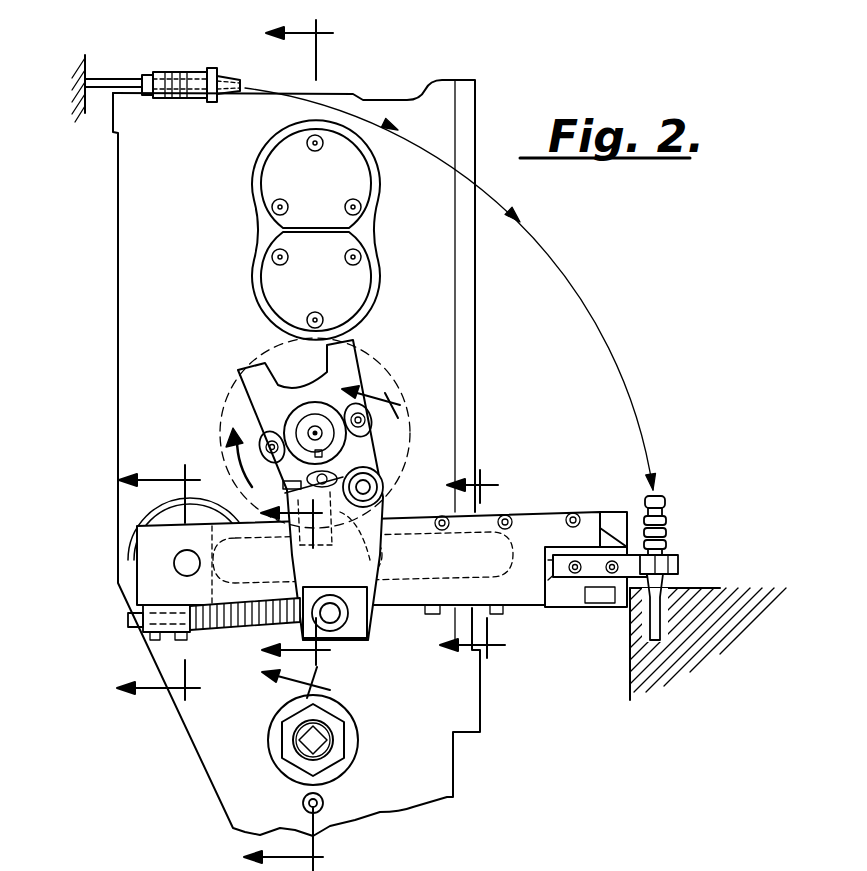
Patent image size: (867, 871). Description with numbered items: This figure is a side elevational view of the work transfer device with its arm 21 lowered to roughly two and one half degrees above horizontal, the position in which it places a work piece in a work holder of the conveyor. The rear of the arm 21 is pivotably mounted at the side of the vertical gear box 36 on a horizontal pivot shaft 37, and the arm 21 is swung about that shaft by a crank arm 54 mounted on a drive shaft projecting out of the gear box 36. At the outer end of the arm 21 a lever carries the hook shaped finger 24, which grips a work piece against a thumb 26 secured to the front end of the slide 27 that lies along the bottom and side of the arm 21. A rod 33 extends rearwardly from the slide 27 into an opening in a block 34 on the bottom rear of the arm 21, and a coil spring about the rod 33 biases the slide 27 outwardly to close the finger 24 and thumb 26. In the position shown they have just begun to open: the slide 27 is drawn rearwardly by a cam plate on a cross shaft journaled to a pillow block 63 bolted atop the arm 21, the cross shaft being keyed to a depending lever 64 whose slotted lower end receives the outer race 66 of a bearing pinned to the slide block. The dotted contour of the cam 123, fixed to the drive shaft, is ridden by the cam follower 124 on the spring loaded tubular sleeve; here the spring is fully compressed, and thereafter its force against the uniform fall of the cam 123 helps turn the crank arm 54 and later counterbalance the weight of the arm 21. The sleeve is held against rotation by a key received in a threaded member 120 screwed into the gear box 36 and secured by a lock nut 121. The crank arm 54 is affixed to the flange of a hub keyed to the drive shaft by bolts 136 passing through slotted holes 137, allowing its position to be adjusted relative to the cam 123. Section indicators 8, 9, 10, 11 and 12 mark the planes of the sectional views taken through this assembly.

The gear box 36 is at (118, 290).
The depending lever 64 is at (385, 553).
The horizontal pivot shaft 37 is at (173, 562).
The arm 21 is at (563, 512).
The slide 27 is at (535, 600).
The thumb 26 is at (663, 555).
The finger 24 is at (682, 563).
The crank arm 54 is at (235, 391).
The cam 123 is at (267, 350).
The slotted holes 137 is at (367, 415).
The bolts 136 is at (370, 421).
The pillow block 63 is at (395, 505).
The outer race 66 is at (340, 640).
The cam follower 124 is at (370, 627).
The block 34 is at (140, 623).
The rod 33 is at (223, 623).
The lock nut 121 is at (343, 732).
The threaded member 120 is at (295, 743).
The section line 8- 8 is at (323, 533).
The section line 9- 9 is at (474, 565).
The section line 10- 10 is at (284, 333).
The section line 11- 11 is at (272, 680).
The section line 12- 12 is at (152, 576).